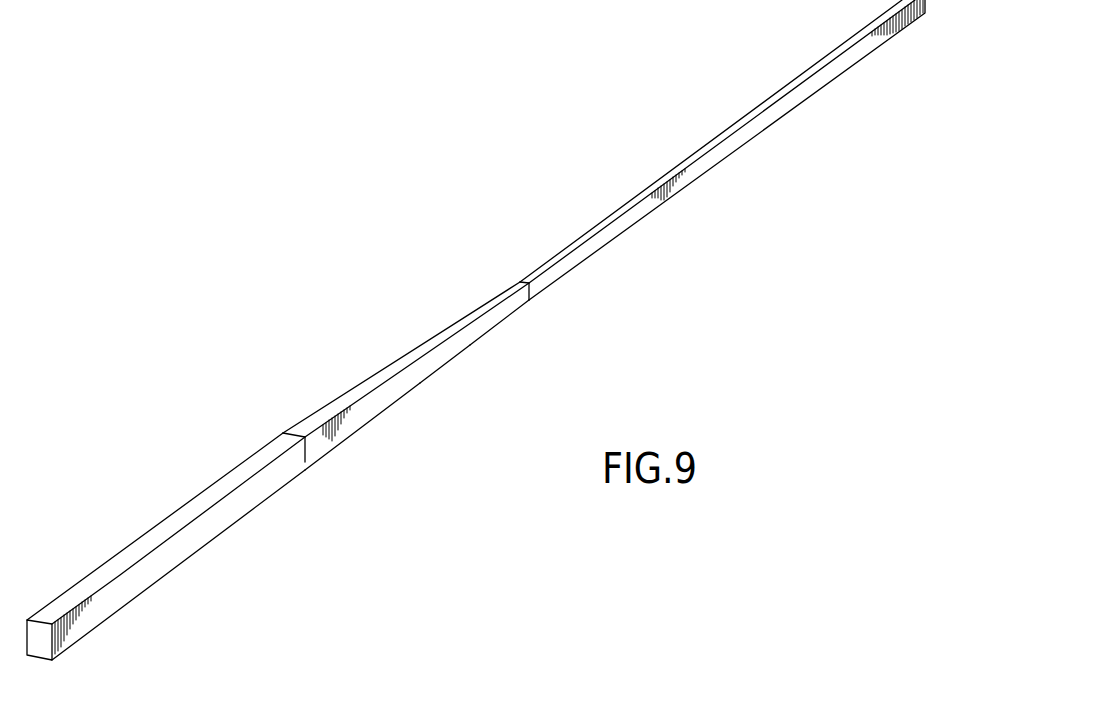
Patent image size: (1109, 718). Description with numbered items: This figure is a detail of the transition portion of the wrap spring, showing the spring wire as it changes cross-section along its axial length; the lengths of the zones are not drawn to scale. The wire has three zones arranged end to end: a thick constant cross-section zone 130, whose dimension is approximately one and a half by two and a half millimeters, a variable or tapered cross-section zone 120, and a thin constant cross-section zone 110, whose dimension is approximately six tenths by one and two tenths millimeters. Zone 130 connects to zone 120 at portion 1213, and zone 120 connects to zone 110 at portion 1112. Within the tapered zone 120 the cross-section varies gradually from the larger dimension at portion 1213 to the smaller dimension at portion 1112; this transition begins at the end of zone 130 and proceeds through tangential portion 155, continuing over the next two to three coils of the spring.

The constant cross-section zone 110 is at (603, 233).
The variable or tapered cross-section zone 120 is at (333, 402).
The constant cross-section zone 130 is at (210, 485).
The tangential portion 155 is at (398, 392).
The portion 1112 is at (463, 339).
The portion 1213 is at (307, 462).